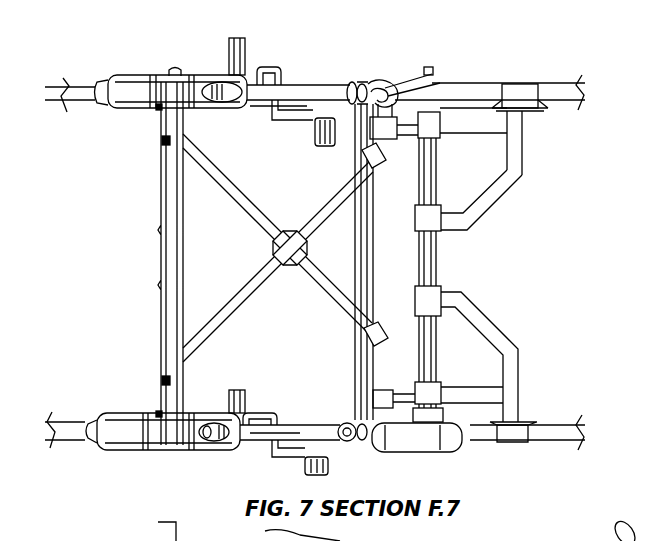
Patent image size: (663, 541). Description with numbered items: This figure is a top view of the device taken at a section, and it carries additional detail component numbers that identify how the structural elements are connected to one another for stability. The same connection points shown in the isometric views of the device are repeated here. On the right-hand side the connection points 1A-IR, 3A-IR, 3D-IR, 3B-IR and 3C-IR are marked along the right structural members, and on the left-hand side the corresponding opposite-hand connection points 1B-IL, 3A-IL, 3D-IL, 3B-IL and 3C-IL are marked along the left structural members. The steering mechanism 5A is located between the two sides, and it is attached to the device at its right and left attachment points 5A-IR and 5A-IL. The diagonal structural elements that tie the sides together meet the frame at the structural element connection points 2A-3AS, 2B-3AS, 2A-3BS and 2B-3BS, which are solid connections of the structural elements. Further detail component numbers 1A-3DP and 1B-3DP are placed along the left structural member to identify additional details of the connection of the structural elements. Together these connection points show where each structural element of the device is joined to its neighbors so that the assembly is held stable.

The connection point 3D-IR is at (203, 42).
The connection point 1A-IR is at (156, 109).
The structural element connection point 2B-3AS is at (164, 141).
The connection point 3A-IR is at (190, 107).
The attachment point 5A-IR is at (357, 80).
The connection point 3B-IR is at (372, 80).
The connection point 3C-IR is at (440, 104).
The structural element connection point 2A-3BS is at (387, 164).
The first column drive pipe section 1A-3DP is at (159, 230).
The steering mechanism 5A is at (356, 250).
The second column drive pipe section 1B-3DP is at (159, 285).
The structural element connection point 2B-3BS is at (388, 334).
The structural element connection point 2A-3AS is at (164, 379).
The connection point 3A-IL is at (188, 409).
The connection point 3B-IL is at (361, 413).
The connection point 3C-IL is at (444, 403).
The connection point 1B-IL is at (159, 414).
The connection point 3D-IL is at (175, 428).
The attachment point 5A-IL is at (362, 445).